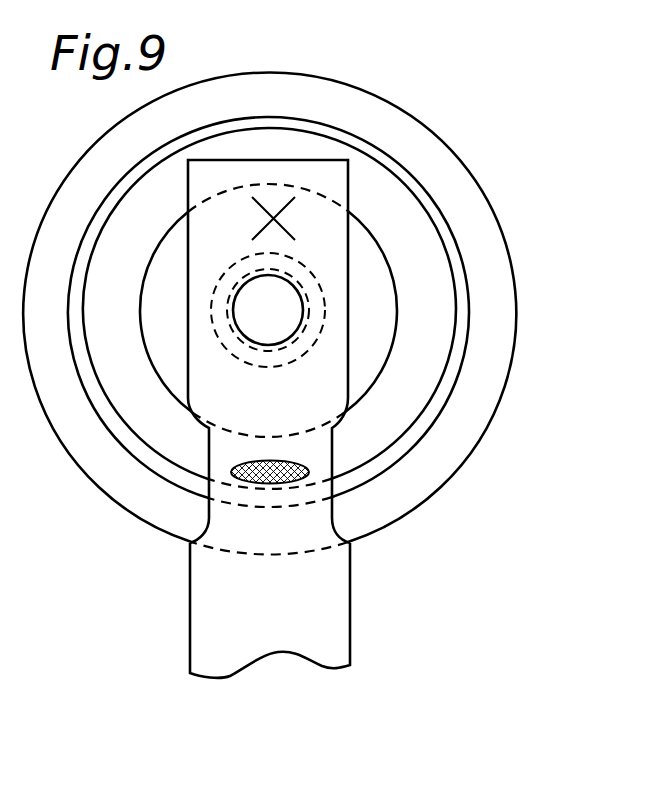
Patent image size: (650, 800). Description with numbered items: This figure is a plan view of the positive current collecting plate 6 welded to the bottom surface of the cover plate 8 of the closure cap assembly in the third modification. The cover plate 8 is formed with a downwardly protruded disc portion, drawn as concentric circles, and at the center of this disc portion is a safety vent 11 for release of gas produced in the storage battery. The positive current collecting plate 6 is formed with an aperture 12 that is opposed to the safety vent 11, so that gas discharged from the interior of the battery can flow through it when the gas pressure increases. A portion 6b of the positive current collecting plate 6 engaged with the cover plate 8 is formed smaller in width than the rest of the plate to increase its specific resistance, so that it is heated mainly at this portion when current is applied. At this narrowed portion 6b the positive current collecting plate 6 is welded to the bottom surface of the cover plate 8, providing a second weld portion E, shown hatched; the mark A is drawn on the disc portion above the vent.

The cover plate 8 is at (382, 345).
The safety vent 11 is at (271, 308).
The aperture 12 is at (303, 303).
The axis / center mark A is at (272, 216).
The second weld portion E is at (308, 471).
The positive current collecting plate 6 is at (306, 614).
The portion formed smaller in width 6b is at (209, 448).